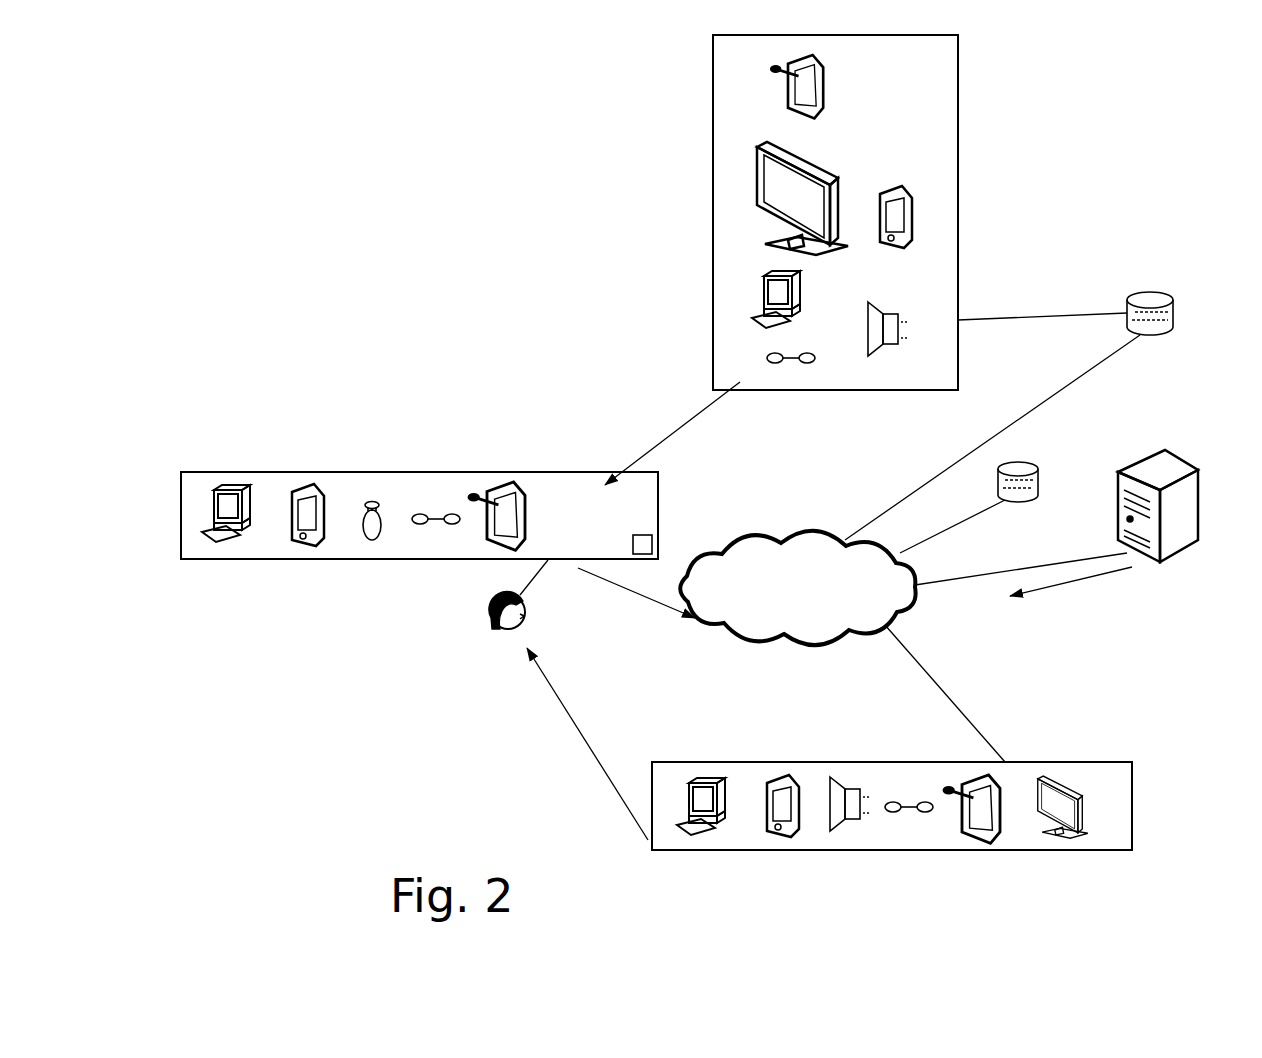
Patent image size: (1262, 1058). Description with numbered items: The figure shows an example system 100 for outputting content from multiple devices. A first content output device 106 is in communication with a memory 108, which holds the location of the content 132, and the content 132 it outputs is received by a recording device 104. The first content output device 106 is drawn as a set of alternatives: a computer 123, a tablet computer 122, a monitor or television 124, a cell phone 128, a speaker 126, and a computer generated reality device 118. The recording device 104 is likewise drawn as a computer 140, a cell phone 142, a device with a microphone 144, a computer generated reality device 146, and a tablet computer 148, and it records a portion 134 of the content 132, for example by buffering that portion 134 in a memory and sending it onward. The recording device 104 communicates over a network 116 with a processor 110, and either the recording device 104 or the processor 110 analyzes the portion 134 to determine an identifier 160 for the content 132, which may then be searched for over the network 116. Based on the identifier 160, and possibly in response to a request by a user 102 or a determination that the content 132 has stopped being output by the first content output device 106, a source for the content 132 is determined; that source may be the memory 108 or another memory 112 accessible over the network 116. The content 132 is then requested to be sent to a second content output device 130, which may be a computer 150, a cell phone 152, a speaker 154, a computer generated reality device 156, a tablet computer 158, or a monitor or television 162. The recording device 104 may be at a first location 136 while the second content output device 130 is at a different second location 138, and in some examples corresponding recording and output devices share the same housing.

The system 100 is at (482, 195).
The user 102 is at (478, 608).
The recording device 104 is at (563, 462).
The first content output device 106 is at (690, 212).
The memory 108 is at (1173, 315).
The processor 110 is at (1165, 555).
The memory 112 is at (1035, 497).
The network 116 is at (907, 607).
The computer generated reality device 118 is at (760, 358).
The tablet computer 122 is at (780, 92).
The computer 123 is at (760, 290).
The monitor or television 124 is at (820, 163).
The speaker 126 is at (915, 327).
The cell phone 128 is at (913, 217).
The second content output device 130 is at (1137, 779).
The content 132 is at (663, 425).
The portion of content 134 is at (653, 543).
The first location 136 is at (330, 570).
The second location 138 is at (777, 855).
The computer 140 is at (222, 488).
The cell phone 142 is at (317, 482).
The device with a microphone 144 is at (377, 490).
The computer generated reality device 146 is at (430, 500).
The tablet computer 148 is at (490, 478).
The computer 150 is at (697, 780).
The cell phone 152 is at (792, 770).
The speaker 154 is at (848, 775).
The computer generated reality device 156 is at (913, 805).
The tablet computer 158 is at (968, 770).
The identifier 160 is at (640, 608).
The monitor or television 162 is at (1053, 785).